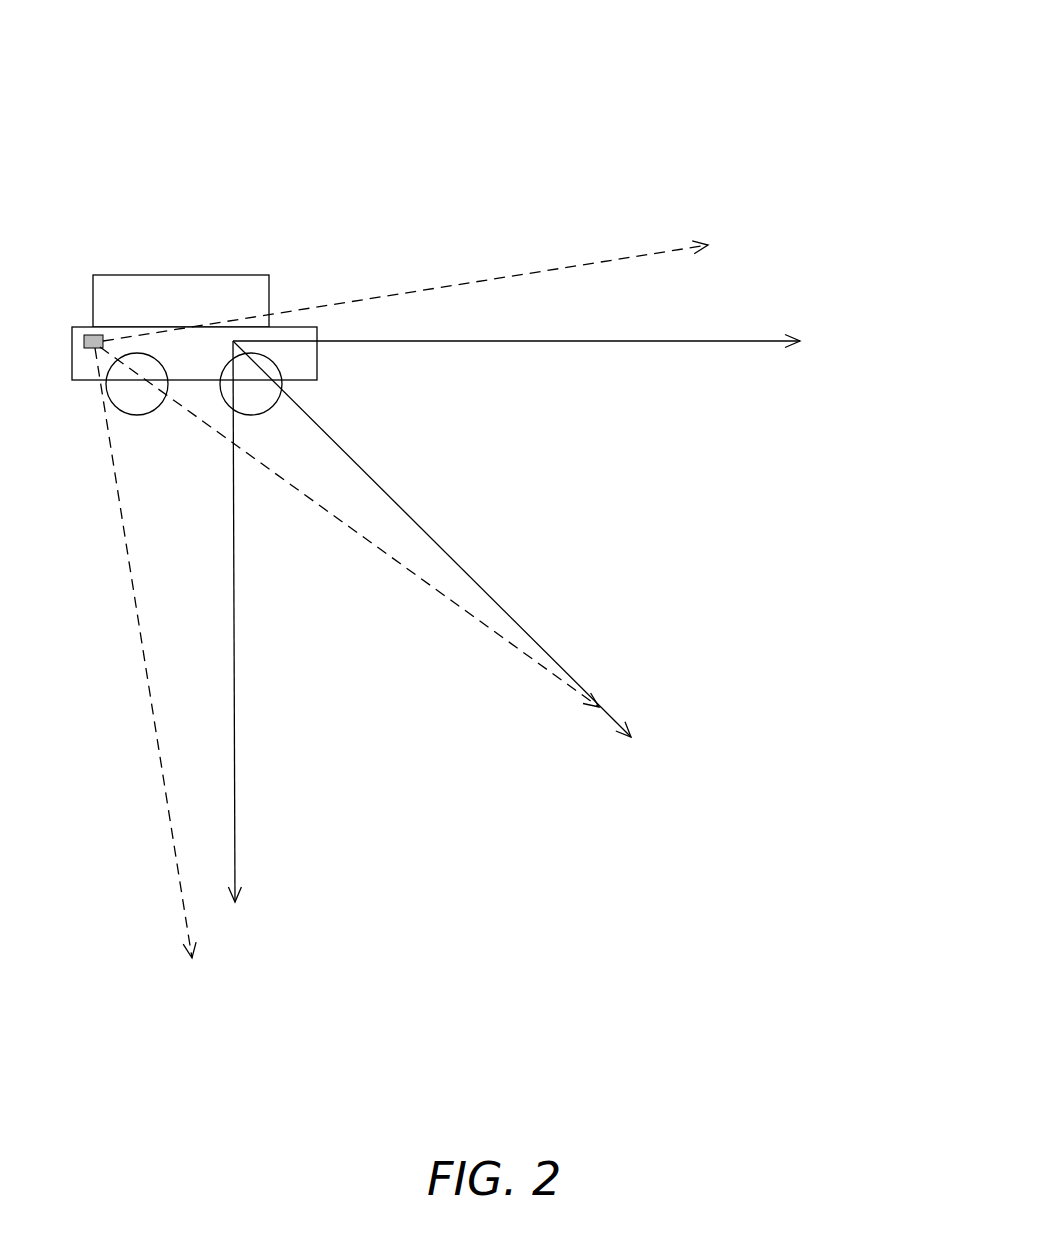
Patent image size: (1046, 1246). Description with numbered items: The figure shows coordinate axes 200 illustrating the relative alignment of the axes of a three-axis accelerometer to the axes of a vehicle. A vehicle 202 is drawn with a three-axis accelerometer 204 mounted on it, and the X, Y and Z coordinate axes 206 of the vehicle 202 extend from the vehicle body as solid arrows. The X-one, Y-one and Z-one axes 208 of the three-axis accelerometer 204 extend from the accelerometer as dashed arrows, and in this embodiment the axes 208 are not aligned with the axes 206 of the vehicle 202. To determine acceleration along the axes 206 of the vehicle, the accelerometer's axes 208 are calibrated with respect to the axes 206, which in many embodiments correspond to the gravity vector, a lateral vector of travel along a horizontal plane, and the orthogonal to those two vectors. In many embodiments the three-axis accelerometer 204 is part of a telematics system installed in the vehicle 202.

The coordinate axes 200 is at (721, 92).
The vehicle 202 is at (235, 275).
The 3-axis accelerometer 204 is at (94, 348).
The axes of the vehicle 206 is at (728, 341).
The axes of the 3-axis accelerometer 208 is at (333, 305).